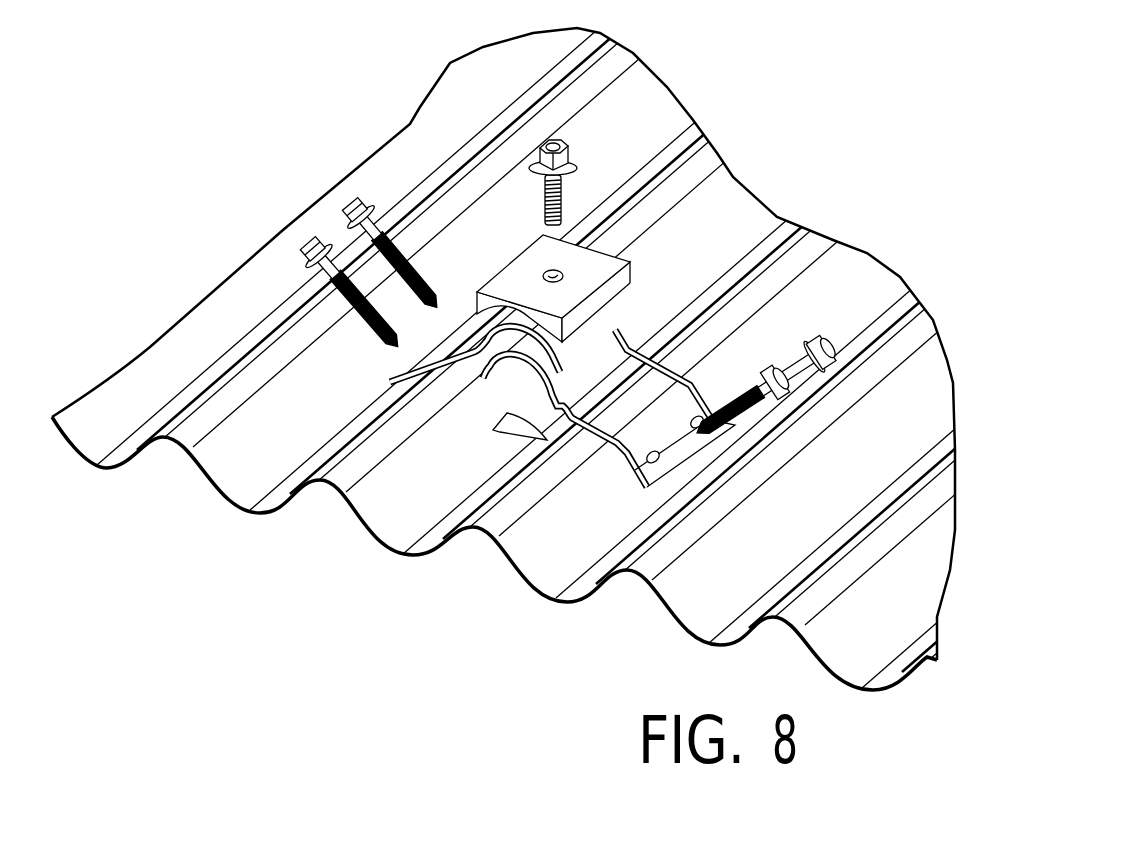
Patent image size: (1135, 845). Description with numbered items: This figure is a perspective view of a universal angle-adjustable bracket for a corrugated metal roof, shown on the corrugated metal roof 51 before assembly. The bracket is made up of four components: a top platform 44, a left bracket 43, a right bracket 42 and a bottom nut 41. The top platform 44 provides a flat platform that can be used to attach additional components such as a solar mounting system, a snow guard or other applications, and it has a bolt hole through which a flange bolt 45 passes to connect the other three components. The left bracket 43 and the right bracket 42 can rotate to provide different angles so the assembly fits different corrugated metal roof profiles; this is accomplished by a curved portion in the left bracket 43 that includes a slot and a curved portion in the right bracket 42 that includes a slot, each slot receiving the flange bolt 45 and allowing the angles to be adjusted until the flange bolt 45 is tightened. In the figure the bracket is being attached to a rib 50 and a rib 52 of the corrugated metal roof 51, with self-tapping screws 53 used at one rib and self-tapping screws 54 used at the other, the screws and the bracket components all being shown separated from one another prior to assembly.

The bottom nut 41 is at (510, 414).
The right bracket 42 is at (730, 395).
The left bracket 43 is at (673, 340).
The top platform 44 is at (637, 270).
The flange bolt 45 is at (578, 150).
The rib 50 is at (320, 483).
The corrugated metal roof 51 is at (218, 518).
The rib 52 is at (487, 528).
The self-tapping screws 53 is at (353, 200).
The self-tapping screws 54 is at (831, 345).